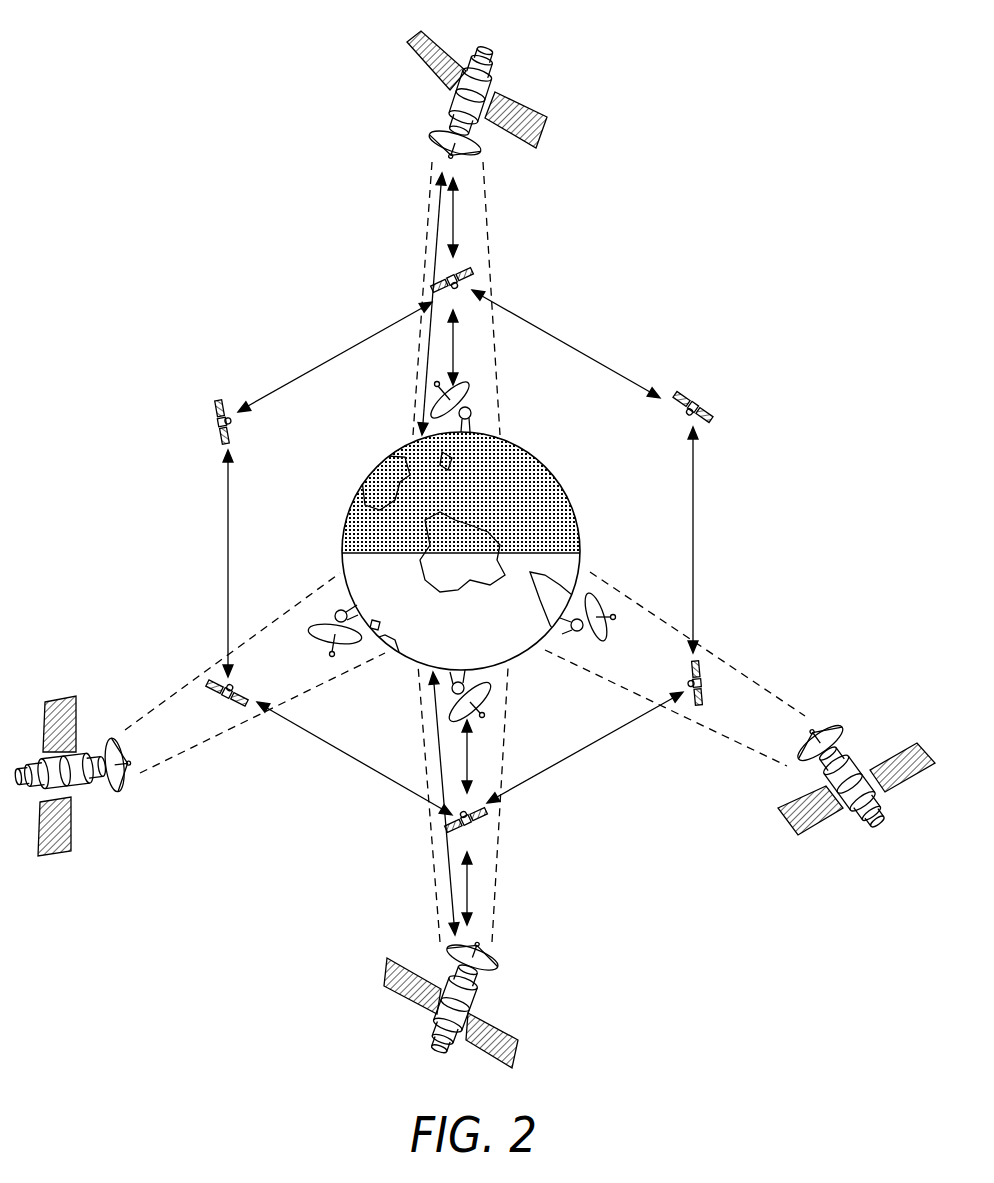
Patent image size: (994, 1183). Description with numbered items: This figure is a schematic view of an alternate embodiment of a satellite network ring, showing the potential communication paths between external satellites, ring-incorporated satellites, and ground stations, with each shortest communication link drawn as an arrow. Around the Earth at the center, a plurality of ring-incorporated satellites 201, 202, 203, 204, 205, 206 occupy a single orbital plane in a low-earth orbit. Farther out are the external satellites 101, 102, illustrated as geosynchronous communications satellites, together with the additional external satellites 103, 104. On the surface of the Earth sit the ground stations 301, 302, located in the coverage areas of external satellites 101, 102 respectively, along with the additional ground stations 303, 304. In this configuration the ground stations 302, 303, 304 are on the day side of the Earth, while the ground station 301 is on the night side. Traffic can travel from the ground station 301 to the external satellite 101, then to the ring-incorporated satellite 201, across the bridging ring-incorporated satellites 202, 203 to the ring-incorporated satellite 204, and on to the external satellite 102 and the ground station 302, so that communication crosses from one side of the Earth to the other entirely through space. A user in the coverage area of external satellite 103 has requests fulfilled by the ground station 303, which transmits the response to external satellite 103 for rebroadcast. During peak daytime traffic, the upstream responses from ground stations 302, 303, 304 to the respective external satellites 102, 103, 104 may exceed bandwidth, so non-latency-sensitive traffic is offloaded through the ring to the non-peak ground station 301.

The external satellite 101 is at (488, 55).
The external satellite 102 is at (862, 815).
The external satellite 103 is at (472, 998).
The external satellite 104 is at (80, 790).
The ring-incorporated satellite 201 is at (466, 280).
The ring-incorporated satellite 202 is at (695, 405).
The ring-incorporated satellite 203 is at (700, 666).
The ring-incorporated satellite 204 is at (476, 830).
The ring-incorporated satellite 205 is at (228, 688).
The ring-incorporated satellite 206 is at (216, 422).
The ground station 301 is at (472, 388).
The ground station 302 is at (600, 605).
The ground station 303 is at (490, 700).
The ground station 304 is at (326, 622).